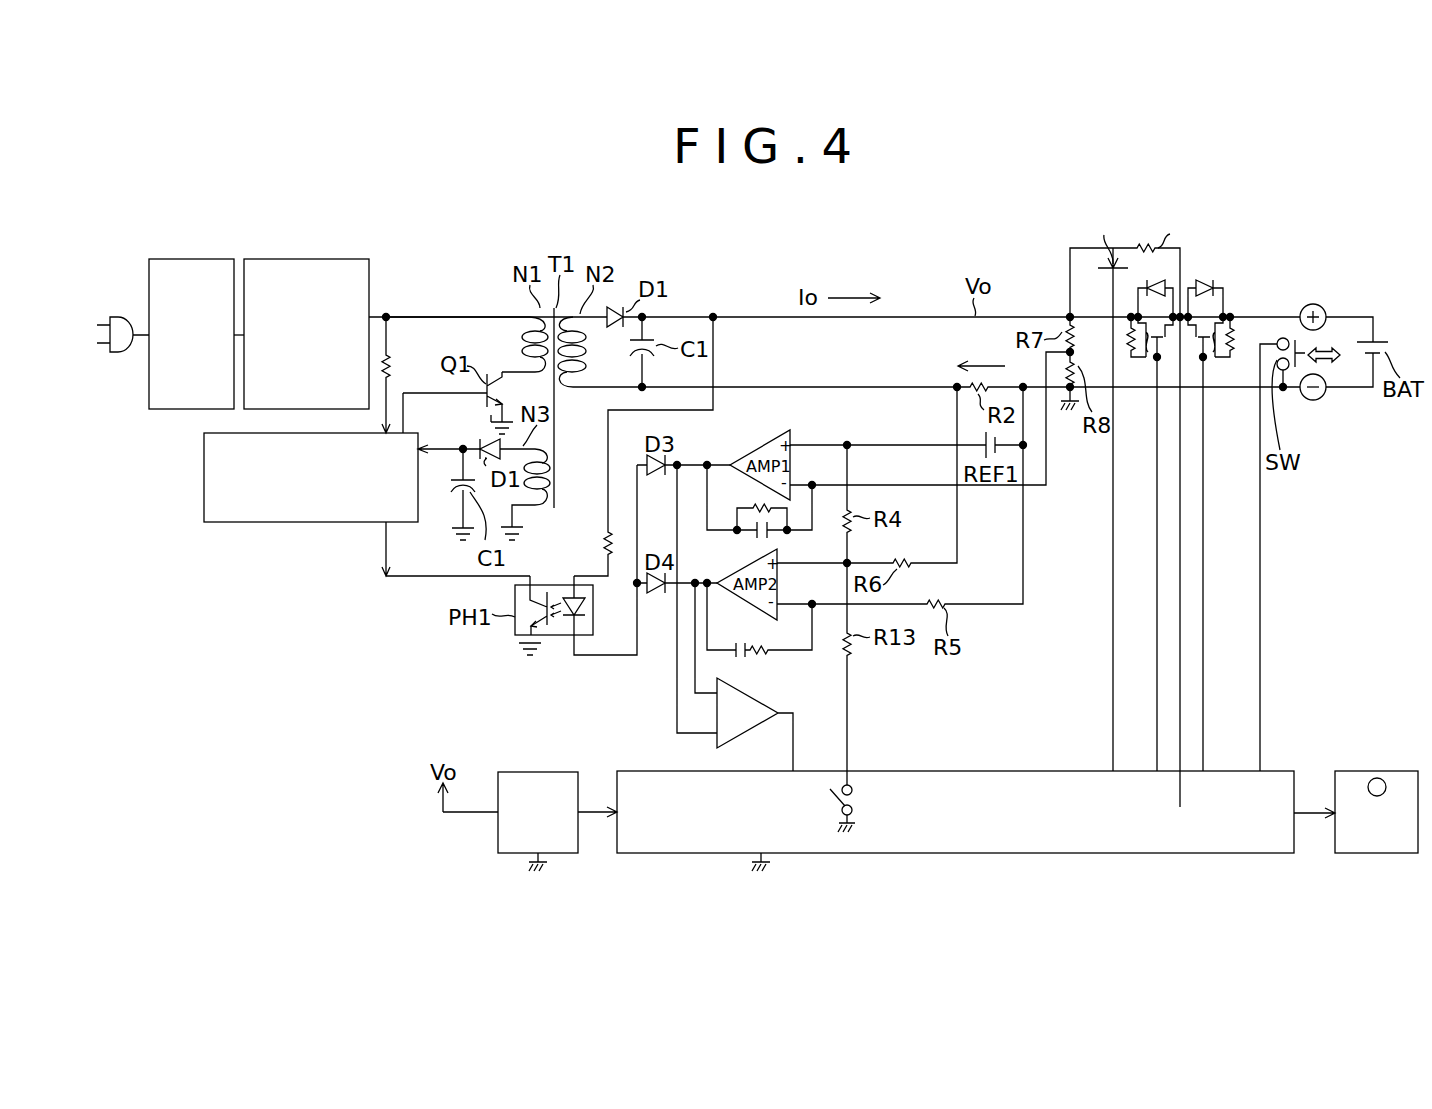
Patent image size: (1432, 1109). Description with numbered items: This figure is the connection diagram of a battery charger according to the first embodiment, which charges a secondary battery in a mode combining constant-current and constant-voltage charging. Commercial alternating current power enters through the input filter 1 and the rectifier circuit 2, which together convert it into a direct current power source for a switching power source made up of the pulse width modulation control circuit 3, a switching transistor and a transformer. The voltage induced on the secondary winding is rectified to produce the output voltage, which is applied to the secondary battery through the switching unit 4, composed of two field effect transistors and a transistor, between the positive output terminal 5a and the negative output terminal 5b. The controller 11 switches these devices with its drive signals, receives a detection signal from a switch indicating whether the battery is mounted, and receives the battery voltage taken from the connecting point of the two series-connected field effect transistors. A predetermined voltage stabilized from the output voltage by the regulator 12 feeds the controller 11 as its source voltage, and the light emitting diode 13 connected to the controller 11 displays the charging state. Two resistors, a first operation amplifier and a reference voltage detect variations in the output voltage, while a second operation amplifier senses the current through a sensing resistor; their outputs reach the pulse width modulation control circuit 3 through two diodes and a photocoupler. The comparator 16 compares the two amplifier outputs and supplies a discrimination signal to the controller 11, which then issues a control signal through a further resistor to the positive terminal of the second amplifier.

The input filter 1 is at (204, 258).
The rectifier circuit 2 is at (310, 258).
The pulse width modulation control circuit 3 is at (322, 523).
The switching unit 4 is at (1256, 217).
The output terminal 5a is at (1313, 303).
The output terminal 5b is at (1313, 401).
The controller 11 is at (960, 770).
The regulator 12 is at (538, 771).
The LED 13 is at (1377, 770).
The comparator 16 is at (760, 695).